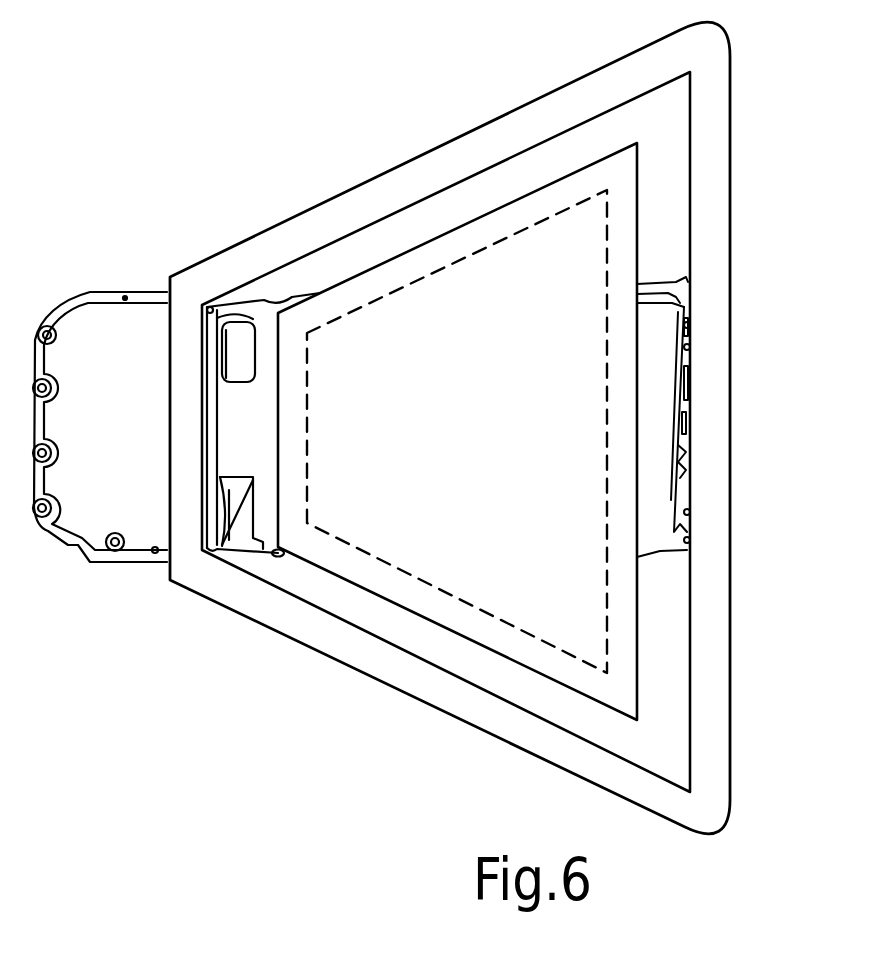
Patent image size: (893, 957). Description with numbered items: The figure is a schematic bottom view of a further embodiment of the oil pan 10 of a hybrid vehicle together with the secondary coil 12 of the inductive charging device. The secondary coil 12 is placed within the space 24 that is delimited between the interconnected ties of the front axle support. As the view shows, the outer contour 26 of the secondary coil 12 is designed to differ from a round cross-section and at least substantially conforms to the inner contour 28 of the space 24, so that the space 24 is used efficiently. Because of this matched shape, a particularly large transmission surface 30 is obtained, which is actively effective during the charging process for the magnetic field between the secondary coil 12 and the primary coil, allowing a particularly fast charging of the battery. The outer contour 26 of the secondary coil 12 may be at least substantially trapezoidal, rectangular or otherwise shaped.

The oil pan 10 is at (267, 553).
The secondary coil 12 is at (578, 434).
The space 24 is at (681, 134).
The outer contour 26 is at (522, 196).
The inner contour 28 is at (417, 213).
The transmission surface 30 is at (575, 378).